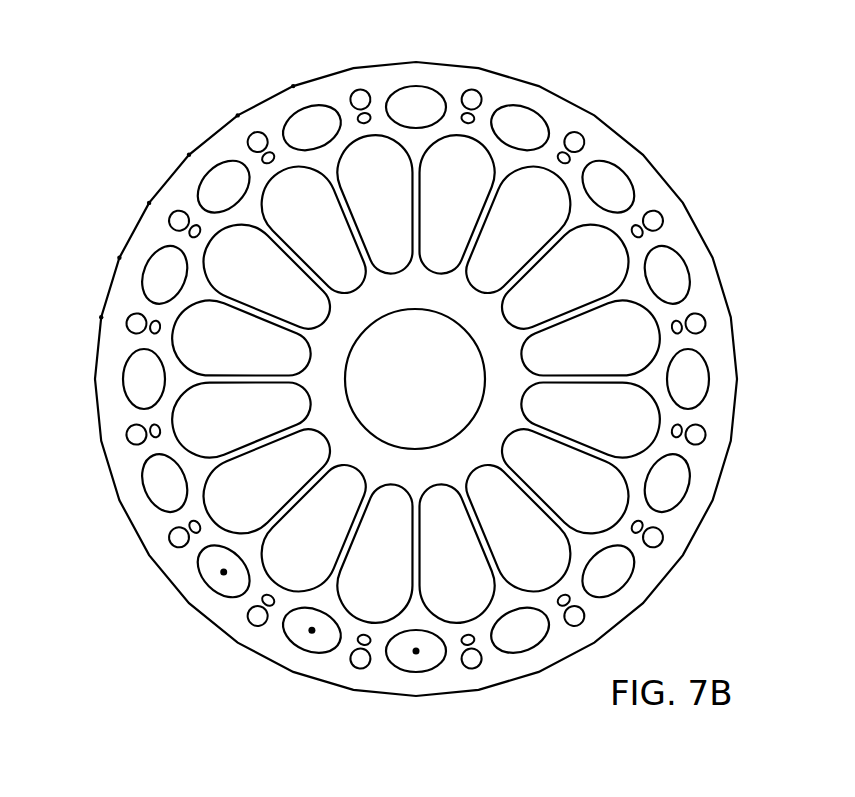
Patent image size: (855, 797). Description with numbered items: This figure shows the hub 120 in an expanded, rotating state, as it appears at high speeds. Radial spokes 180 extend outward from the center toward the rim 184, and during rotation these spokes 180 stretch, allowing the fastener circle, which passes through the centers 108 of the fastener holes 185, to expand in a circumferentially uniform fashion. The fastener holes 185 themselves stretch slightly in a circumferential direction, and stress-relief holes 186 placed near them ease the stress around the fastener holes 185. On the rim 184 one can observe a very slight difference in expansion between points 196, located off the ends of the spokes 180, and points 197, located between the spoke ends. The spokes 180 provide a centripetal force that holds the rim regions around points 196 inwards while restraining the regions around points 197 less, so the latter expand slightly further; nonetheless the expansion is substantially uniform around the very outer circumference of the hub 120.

The centers of fastener holes 108 is at (224, 572).
The hub 120 is at (712, 487).
The spokes 180 is at (255, 386).
The rim 184 is at (571, 121).
The fastener holes 185 is at (637, 188).
The stress-relief holes 186 is at (358, 89).
The points on rim off the end of spokes 196 is at (292, 86).
The points on rim between the ends of spokes 197 is at (237, 115).